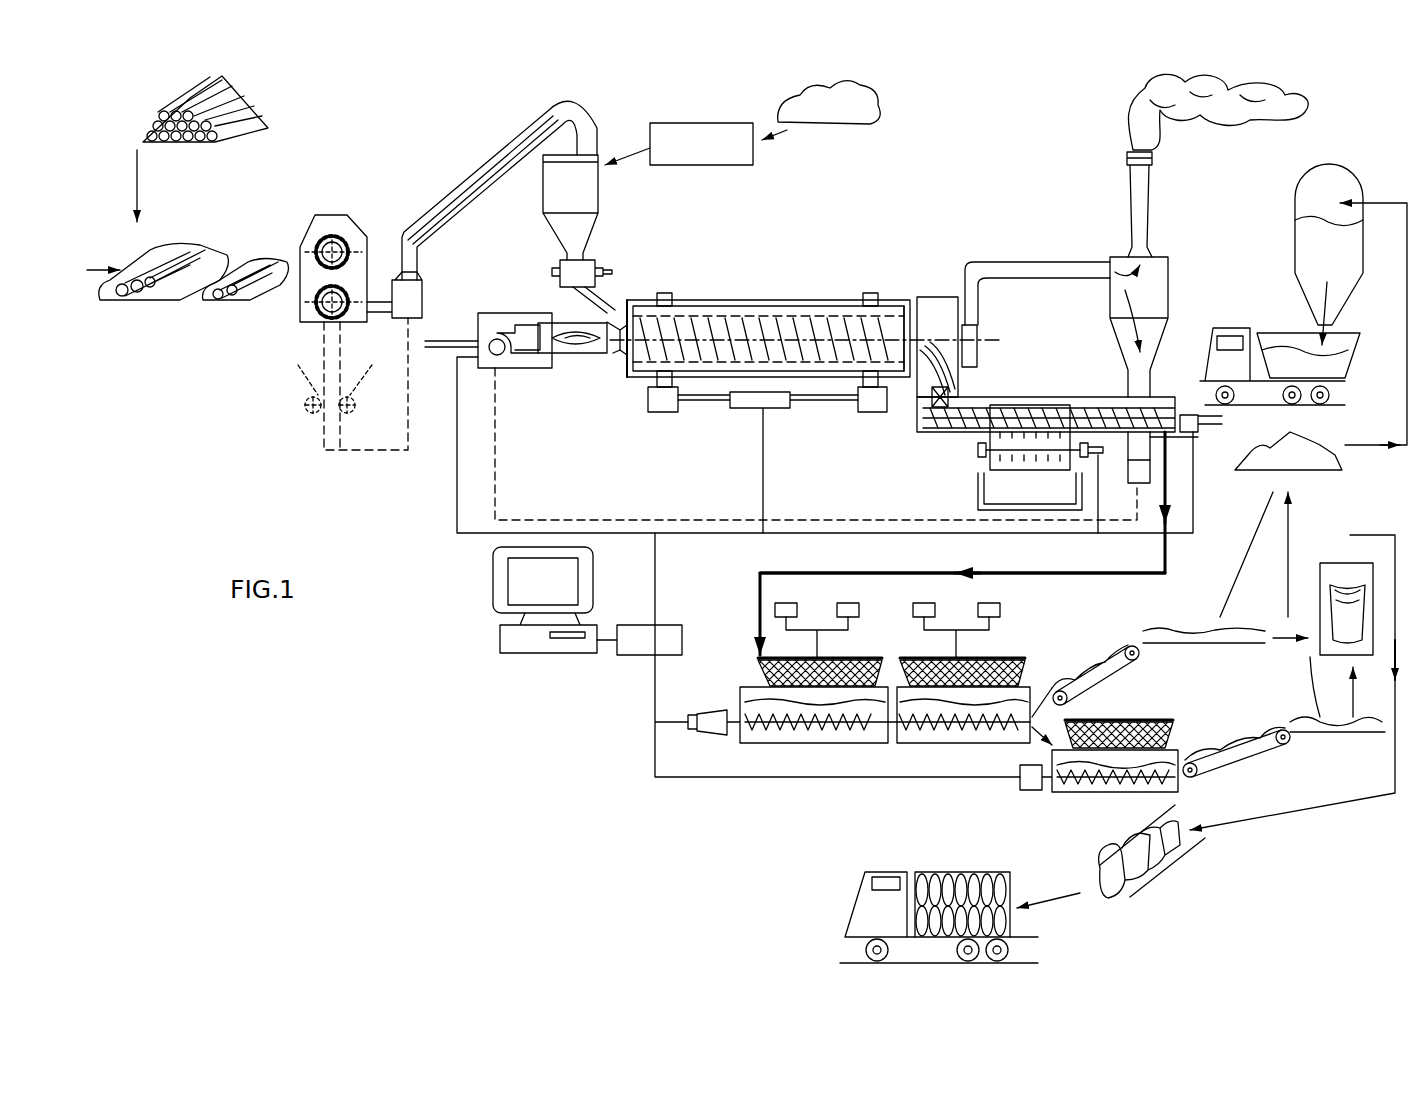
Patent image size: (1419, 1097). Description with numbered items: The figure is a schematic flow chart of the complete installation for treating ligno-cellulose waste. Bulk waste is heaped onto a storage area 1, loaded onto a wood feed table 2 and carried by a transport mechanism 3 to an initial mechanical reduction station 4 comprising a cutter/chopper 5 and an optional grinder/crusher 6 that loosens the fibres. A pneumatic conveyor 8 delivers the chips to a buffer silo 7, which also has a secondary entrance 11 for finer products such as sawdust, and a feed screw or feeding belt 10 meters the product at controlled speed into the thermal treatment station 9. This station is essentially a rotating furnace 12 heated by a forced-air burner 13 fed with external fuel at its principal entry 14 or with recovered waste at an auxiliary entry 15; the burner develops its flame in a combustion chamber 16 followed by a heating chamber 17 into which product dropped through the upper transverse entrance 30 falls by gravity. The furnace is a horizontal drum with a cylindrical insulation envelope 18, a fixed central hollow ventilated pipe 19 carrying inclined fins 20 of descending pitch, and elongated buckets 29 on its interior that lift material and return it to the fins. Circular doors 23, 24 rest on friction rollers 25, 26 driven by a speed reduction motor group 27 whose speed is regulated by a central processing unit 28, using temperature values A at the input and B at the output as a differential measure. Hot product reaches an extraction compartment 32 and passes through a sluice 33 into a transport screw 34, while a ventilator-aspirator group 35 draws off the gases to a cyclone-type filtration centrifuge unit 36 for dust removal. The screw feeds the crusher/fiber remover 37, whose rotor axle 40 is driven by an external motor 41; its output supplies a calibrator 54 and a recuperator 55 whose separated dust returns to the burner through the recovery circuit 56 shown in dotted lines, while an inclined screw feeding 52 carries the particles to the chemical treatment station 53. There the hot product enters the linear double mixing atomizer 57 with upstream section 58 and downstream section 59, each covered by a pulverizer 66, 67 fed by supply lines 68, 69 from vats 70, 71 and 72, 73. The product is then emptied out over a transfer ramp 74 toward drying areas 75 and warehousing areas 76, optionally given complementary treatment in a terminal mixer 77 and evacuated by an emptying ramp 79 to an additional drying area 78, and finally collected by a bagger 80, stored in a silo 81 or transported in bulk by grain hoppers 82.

The storage area 1 is at (258, 147).
The wood feed table 2 is at (198, 238).
The transport mechanism 3 is at (240, 267).
The initial mechanical reduction station 4 is at (375, 217).
The cutter/chopper 5 is at (333, 223).
The grinder/crusher 6 is at (300, 415).
The buffer silo 7 is at (537, 215).
The pneumatic conveyor 8 is at (493, 167).
The thermal treatment station 9 is at (737, 277).
The feed screw or feeding belt 10 is at (613, 293).
The secondary entrance 11 is at (617, 175).
The rotating furnace 12 is at (705, 292).
The forced-air burner 13 is at (472, 337).
The principal entry 14 is at (438, 352).
The auxiliary entry 15 is at (489, 363).
The combustion chamber 16 is at (573, 340).
The heating chamber 17 is at (603, 342).
The cylindrical insulation envelope 18 is at (780, 318).
The hollow ventilated pipe 19 is at (913, 290).
The inclined fins 20 is at (815, 332).
The circular door 23 is at (665, 293).
The circular door 24 is at (870, 292).
The friction roller 25 is at (667, 412).
The friction roller 26 is at (870, 405).
The speed reduction motor group 27 is at (773, 405).
The central processing unit 28 is at (537, 657).
The elongated buckets 29 is at (740, 310).
The upper transverse entrance 30 is at (583, 312).
The extraction compartment 32 is at (955, 295).
The sluice 33 is at (982, 405).
The transport screw 34 is at (1087, 405).
The ventilator-aspirator group 35 is at (972, 335).
The cyclone-type filtration centrifuge unit 36 is at (1175, 300).
The crusher/fiber remover 37 is at (600, 253).
The axle 40 is at (1048, 470).
The external motor 41 is at (1100, 455).
The inclined screw feeding 52 is at (1168, 548).
The chemical treatment station 53 is at (1042, 668).
The calibrator 54 is at (1140, 448).
The recuperator 55 is at (1152, 483).
The recovery circuit 56 is at (502, 518).
The linear double mixing atomizer 57 is at (875, 628).
The upstream section 58 is at (767, 745).
The downstream section 59 is at (922, 745).
The pulverizer 66 is at (787, 656).
The pulverizer 67 is at (1032, 662).
The supply line 68 is at (820, 648).
The supply line 69 is at (956, 650).
The vat 70 is at (785, 602).
The vat 71 is at (847, 603).
The vat 72 is at (925, 605).
The vat 73 is at (1000, 610).
The inclined belt conveyor 74 is at (1100, 663).
The drying areas 75 is at (1217, 640).
The warehousing areas 76 is at (1332, 472).
The terminal mixer 77 is at (1087, 793).
The additional drying area 78 is at (1343, 727).
The emptying ramp 79 is at (1230, 753).
The bagger 80 is at (1353, 585).
The silo 81 is at (1312, 248).
The grain hoppers 82 is at (1270, 325).
The temperature probe value at input A is at (617, 365).
The temperature probe value at output B is at (945, 292).